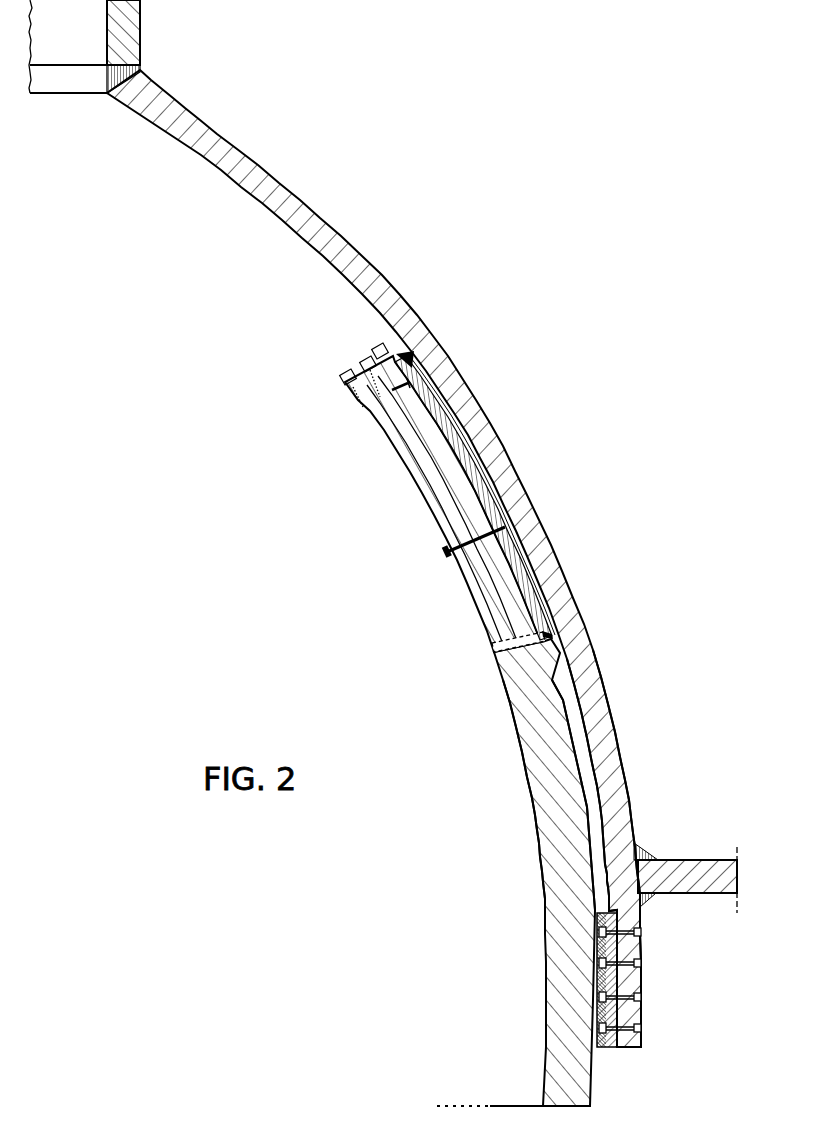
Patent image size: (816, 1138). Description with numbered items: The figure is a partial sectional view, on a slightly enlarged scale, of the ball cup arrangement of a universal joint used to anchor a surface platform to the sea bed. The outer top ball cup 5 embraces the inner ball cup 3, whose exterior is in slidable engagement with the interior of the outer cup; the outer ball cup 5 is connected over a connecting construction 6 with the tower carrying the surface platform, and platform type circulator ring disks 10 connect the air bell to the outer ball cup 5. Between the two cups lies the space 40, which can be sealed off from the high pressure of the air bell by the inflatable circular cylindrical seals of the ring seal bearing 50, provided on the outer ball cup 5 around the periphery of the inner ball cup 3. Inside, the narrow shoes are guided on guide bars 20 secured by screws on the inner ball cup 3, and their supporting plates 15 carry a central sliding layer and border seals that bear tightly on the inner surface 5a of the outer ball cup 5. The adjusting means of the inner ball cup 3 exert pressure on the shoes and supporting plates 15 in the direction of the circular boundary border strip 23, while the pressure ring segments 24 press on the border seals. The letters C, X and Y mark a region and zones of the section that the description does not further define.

The inner ball cup 3 is at (552, 1058).
The outer top ball cup 5 is at (470, 405).
The inner surface of the outer ball cup 5a is at (597, 818).
The connecting construction 6 is at (134, 31).
The platform type circulator ring disks 10 is at (663, 865).
The supporting plate 15 is at (516, 557).
The guide bar 20 is at (513, 580).
The circular boundary border strip 23 is at (559, 652).
The pressure ring segment 24 is at (409, 352).
The space between the two ball cups 40 is at (580, 722).
The ring seal bearing 50 is at (656, 993).
The gap C is at (510, 467).
The region X is at (490, 248).
The region Y is at (682, 893).